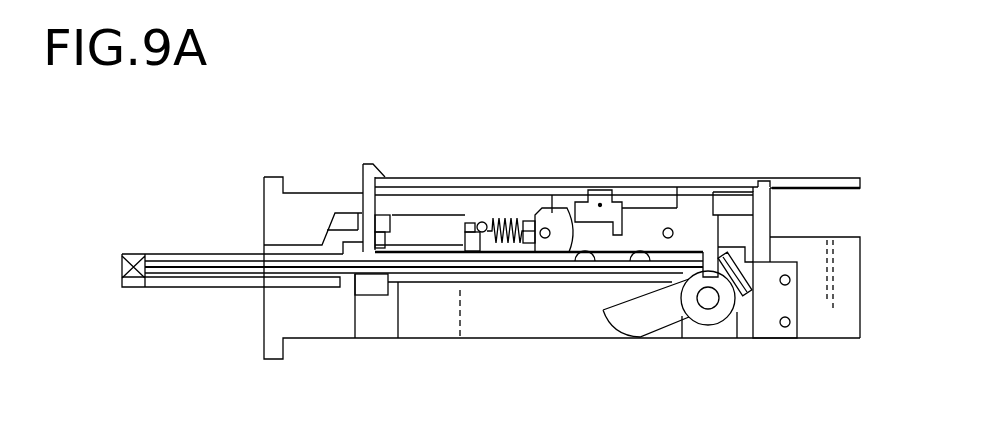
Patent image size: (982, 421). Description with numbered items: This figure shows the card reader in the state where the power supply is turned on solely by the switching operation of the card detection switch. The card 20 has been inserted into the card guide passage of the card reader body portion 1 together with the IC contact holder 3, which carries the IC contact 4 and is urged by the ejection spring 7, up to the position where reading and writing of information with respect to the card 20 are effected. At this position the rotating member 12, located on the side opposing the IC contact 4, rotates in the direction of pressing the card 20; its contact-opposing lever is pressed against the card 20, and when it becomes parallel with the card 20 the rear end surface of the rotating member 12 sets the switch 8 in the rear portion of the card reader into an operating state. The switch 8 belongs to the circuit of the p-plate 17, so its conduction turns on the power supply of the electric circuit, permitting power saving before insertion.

The card reader body portion 1 is at (313, 322).
The IC contact holder 3 is at (689, 230).
The IC contact 4 is at (568, 255).
The ejection spring 7 is at (505, 212).
The switch 8 is at (788, 307).
The rotating member 12 is at (662, 315).
The p-plate 17 is at (815, 183).
The card 20 is at (200, 267).